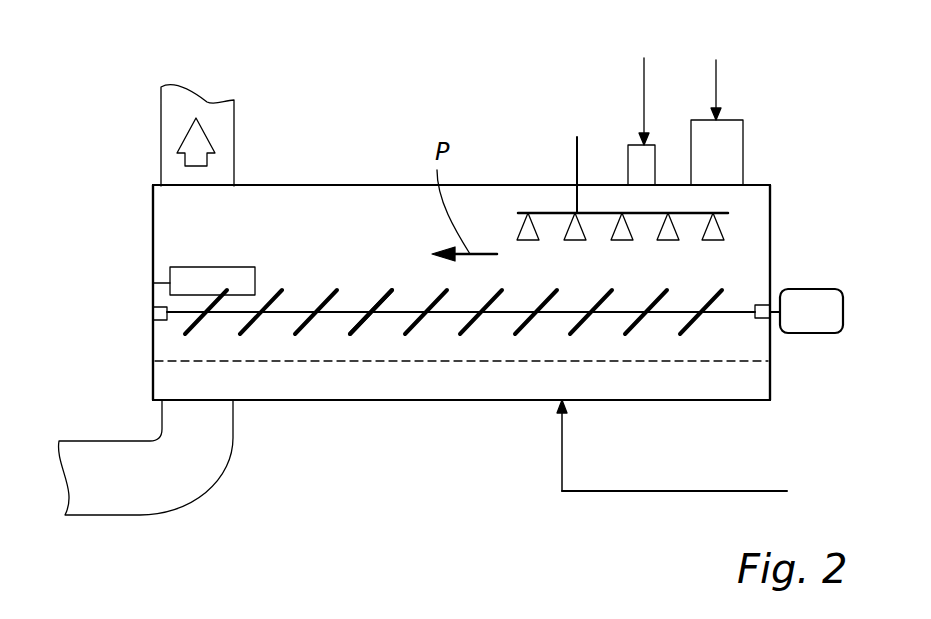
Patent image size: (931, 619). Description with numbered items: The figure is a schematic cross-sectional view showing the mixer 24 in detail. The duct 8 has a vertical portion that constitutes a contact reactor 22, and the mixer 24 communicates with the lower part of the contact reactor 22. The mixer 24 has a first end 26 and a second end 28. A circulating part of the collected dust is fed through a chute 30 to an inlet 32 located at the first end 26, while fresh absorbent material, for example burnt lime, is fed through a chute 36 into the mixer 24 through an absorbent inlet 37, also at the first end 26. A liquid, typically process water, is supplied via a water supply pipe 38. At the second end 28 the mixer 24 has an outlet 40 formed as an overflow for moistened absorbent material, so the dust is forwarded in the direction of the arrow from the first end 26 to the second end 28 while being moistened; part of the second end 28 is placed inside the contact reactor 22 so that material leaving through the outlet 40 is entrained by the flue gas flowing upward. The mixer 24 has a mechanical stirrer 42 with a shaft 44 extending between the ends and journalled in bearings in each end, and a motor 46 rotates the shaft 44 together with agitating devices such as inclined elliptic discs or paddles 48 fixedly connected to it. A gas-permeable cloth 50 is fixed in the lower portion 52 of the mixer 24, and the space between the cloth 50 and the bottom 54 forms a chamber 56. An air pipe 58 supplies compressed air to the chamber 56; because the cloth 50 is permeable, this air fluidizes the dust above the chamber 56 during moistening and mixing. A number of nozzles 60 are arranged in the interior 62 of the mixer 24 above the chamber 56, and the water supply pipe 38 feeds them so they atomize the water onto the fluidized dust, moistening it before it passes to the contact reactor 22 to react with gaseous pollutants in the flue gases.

The duct 8 is at (93, 452).
The contact reactor 22 is at (172, 115).
The mixer 24 is at (405, 113).
The first end 26 is at (758, 200).
The second end 28 is at (180, 223).
The chute 30 is at (717, 73).
The inlet 32 is at (732, 150).
The chute 36 is at (642, 73).
The absorbent inlet 37 is at (635, 160).
The water supply pipe 38 is at (577, 165).
The outlet 40 is at (153, 283).
The mechanical stirrer 42 is at (352, 308).
The shaft 44 is at (292, 310).
The motor 46 is at (817, 323).
The paddles 48 is at (385, 300).
The gas-permeable cloth 50 is at (632, 362).
The lower portion 52 is at (718, 353).
The bottom 54 is at (727, 400).
The chamber 56 is at (530, 390).
The air pipe 58 is at (648, 491).
The nozzles 60 is at (720, 230).
The interior 62 is at (352, 210).